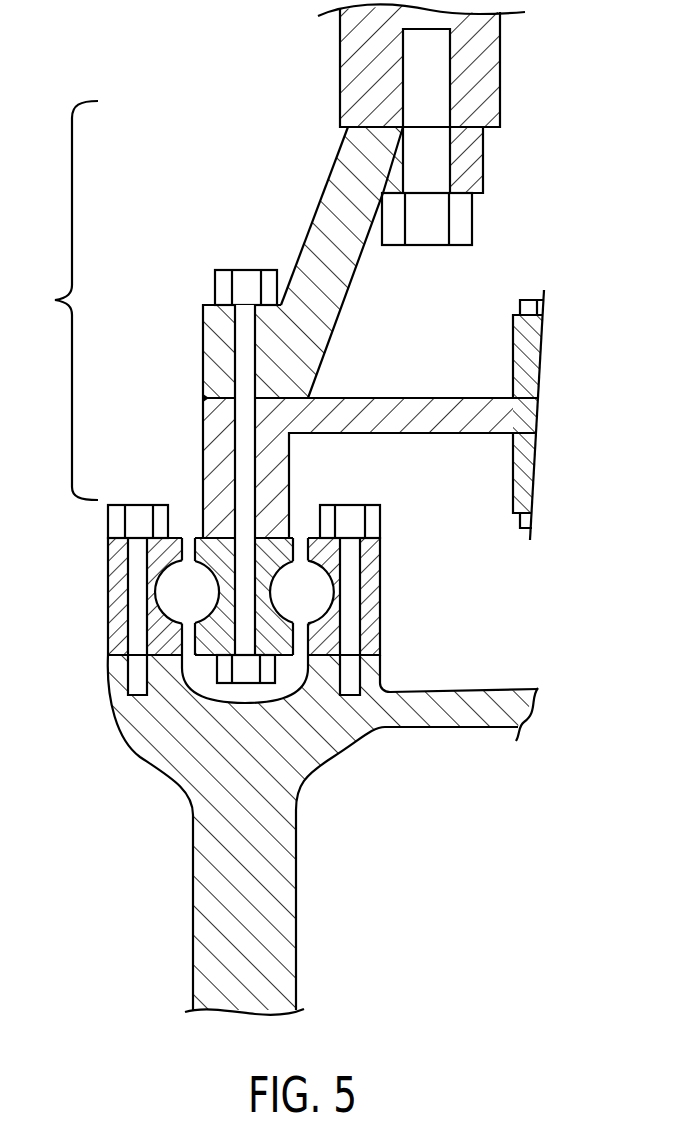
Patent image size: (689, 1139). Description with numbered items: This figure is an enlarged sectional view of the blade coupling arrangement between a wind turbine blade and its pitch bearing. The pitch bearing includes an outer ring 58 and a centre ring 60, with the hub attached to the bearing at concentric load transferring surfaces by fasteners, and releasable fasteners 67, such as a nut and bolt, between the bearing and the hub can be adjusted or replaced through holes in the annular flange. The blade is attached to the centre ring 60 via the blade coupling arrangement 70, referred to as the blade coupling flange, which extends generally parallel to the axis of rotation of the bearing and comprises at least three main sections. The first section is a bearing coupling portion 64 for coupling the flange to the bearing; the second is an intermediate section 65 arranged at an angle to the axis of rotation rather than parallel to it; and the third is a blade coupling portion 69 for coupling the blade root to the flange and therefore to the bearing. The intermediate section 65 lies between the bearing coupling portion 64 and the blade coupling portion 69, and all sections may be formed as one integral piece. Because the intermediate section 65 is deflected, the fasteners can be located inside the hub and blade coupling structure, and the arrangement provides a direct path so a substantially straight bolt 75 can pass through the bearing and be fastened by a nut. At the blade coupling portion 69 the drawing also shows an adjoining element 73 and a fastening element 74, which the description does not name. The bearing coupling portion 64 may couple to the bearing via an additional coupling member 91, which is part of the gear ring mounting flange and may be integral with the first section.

The outer ring 58 is at (128, 640).
The centre ring 60 is at (208, 657).
The bearing coupling portion 64 is at (222, 337).
The intermediate section 65 is at (333, 218).
The releasable fasteners 67 is at (367, 521).
The blade coupling portion 69 is at (472, 155).
The blade coupling arrangement 70 is at (55, 300).
The support member 73 is at (412, 82).
The nut 74 is at (437, 235).
The straight bolt 75 is at (248, 312).
The coupling member 91 is at (222, 450).